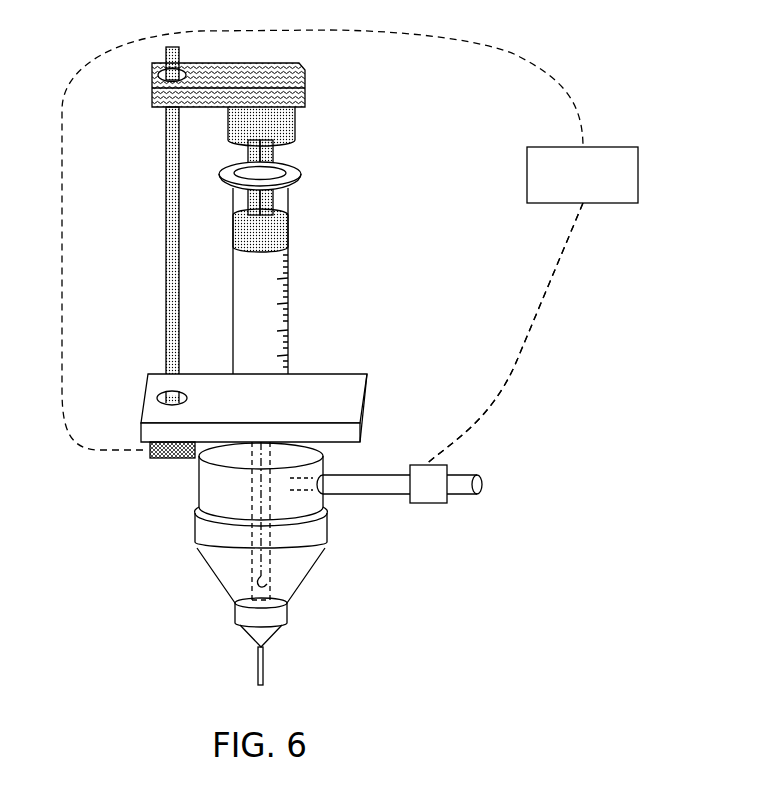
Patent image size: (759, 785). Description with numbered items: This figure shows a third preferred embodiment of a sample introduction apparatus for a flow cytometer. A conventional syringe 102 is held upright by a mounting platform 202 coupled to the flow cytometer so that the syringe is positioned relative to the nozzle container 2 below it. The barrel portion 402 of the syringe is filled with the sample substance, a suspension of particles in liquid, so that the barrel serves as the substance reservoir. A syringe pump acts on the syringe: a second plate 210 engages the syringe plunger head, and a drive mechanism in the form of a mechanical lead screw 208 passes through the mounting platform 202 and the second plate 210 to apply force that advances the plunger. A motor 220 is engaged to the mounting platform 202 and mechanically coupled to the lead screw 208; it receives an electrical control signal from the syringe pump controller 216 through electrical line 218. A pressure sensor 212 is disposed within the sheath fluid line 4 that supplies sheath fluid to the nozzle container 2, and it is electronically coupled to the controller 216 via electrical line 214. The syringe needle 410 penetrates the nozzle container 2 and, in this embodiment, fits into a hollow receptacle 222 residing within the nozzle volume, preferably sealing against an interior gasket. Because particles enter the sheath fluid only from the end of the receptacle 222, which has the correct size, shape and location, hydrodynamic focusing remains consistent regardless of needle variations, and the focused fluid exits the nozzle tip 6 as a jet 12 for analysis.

The nozzle container 2 is at (308, 562).
The sheath fluid line 4 is at (370, 475).
The nozzle tip 6 is at (265, 648).
The jet 12 is at (264, 670).
The syringe 102 is at (303, 256).
The mounting platform 202 is at (367, 374).
The mechanical lead screw 208 is at (166, 235).
The second plate 210 is at (306, 82).
The pressure sensor 212 is at (430, 503).
The electrical line 214 is at (513, 366).
The syringe pump controller 216 is at (617, 147).
The electrical line 218 is at (521, 57).
The motor 220 is at (167, 458).
The hollow receptacle 222 is at (252, 585).
The syringe barrel portion 402 is at (233, 311).
The syringe needle 410 is at (262, 590).